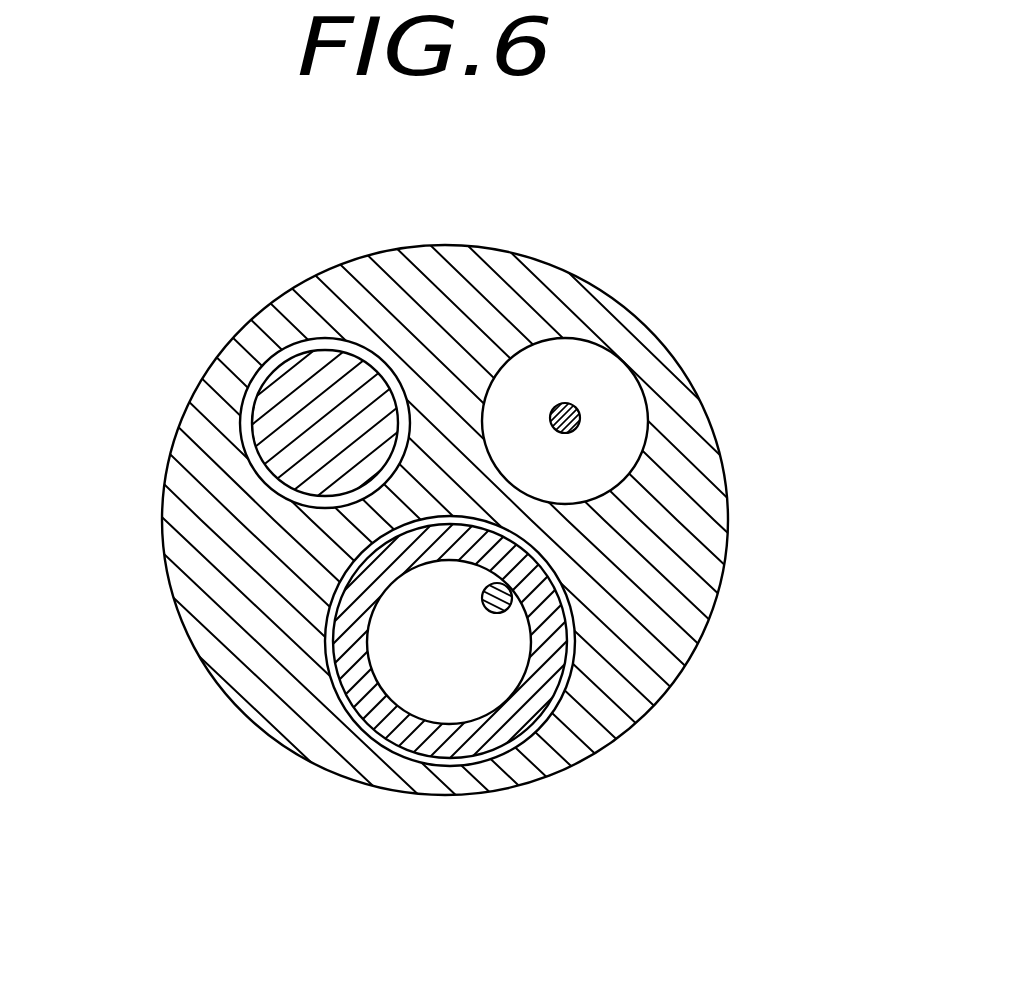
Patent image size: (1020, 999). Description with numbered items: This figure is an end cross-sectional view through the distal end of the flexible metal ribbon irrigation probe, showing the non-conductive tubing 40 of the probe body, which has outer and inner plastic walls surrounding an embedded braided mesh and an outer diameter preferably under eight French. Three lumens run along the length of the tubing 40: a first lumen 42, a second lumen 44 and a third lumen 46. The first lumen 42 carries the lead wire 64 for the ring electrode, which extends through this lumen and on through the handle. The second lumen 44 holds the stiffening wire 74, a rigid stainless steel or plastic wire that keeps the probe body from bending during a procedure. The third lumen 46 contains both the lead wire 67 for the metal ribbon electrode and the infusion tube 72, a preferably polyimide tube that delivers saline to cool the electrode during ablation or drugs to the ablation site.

The non-conductive tubing 40 is at (285, 293).
The first lumen 42 is at (648, 410).
The second lumen 44 is at (240, 425).
The third lumen 46 is at (370, 733).
The lead wire 64 is at (570, 403).
The lead wire 67 is at (512, 600).
The infusion tube 72 is at (530, 703).
The stiffening wire 74 is at (317, 463).